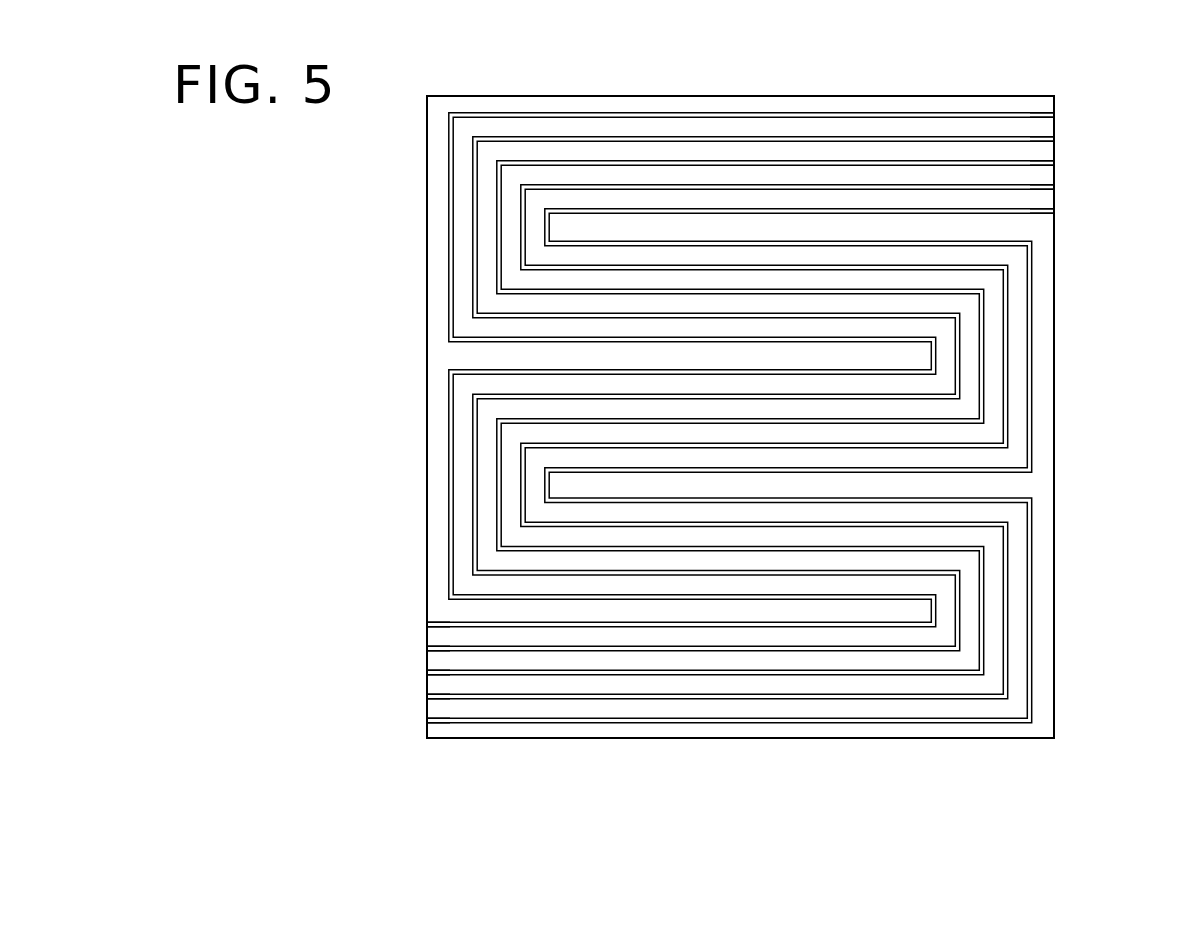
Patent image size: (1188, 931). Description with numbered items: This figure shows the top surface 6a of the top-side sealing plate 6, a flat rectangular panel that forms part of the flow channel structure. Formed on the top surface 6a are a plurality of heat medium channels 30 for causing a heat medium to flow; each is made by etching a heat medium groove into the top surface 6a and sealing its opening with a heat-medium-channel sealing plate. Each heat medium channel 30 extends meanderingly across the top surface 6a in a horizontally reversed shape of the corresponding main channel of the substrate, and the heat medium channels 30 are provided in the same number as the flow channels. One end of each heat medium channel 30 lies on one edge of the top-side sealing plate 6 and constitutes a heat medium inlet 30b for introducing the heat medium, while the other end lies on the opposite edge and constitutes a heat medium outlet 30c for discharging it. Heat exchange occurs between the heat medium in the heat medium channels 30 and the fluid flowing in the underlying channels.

The top-side sealing plate 6 is at (1140, 96).
The top surface 6a is at (1045, 318).
The heat medium channel 30 is at (753, 727).
The heat medium inlet 30b is at (427, 624).
The heat medium outlet 30c is at (1054, 115).